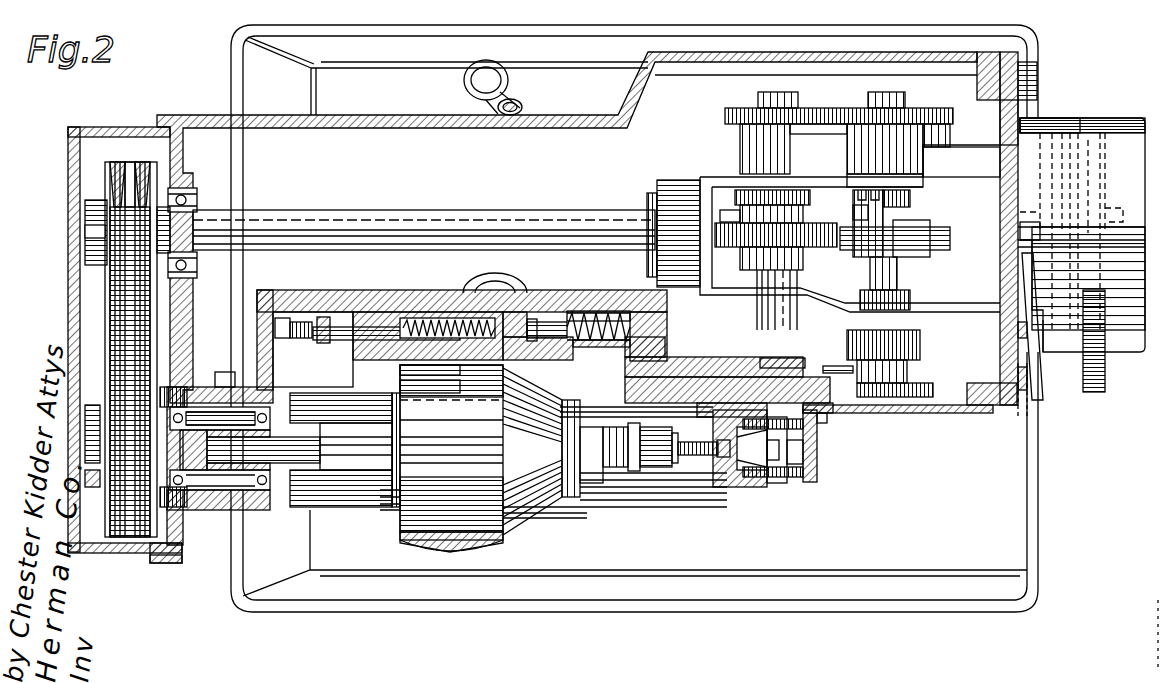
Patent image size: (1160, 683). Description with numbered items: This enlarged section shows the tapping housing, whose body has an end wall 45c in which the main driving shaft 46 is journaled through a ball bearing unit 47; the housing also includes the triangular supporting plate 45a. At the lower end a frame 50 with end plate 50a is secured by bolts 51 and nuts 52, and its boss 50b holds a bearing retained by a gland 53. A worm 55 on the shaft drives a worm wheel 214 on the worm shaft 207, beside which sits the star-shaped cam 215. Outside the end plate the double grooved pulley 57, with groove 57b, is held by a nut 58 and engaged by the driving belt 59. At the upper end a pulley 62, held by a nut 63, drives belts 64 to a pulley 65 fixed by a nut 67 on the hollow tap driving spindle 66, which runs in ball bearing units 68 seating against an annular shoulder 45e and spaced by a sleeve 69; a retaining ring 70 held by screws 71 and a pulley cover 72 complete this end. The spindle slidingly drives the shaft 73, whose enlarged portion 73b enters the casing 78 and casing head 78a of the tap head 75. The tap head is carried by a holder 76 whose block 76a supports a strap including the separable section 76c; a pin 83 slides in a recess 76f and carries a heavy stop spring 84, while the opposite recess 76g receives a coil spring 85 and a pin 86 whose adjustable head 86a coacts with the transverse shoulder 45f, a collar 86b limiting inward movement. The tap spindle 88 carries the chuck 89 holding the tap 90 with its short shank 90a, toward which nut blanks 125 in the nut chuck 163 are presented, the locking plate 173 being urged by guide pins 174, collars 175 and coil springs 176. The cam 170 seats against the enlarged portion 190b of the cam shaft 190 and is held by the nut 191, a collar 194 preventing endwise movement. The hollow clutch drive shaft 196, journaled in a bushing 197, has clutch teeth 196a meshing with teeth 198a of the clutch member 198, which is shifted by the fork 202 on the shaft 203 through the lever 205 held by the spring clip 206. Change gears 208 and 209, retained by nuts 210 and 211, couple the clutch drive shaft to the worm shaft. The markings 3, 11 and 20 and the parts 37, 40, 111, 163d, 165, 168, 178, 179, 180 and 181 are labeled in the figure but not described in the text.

The section line 3 is at (1131, 218).
The section line 11 is at (610, 218).
The section line 20 is at (343, 203).
The filler plug 37 is at (522, 104).
The drive shaft 40 is at (493, 283).
The supporting plate 45a is at (222, 372).
The end wall 45c is at (187, 147).
The annular shoulder 45e is at (290, 410).
The transverse shoulder 45f is at (282, 293).
The main driving shaft 46 is at (362, 213).
The ball bearing unit 47 is at (190, 198).
The frame 50 is at (731, 165).
The end plate 50a is at (1020, 110).
The boss 50b is at (672, 180).
The bolts 51 is at (995, 428).
The nuts 52 is at (1034, 72).
The gland 53 is at (660, 181).
The worm 55 is at (740, 212).
The double grooved pulley 57 is at (1112, 167).
The groove 57b is at (1068, 122).
The nut 58 is at (1112, 206).
The driving belt 59 is at (1112, 122).
The pulley 62 is at (105, 178).
The nut 63 is at (87, 228).
The belts 64 is at (135, 325).
The pulley 65 is at (105, 372).
The hollow tap driving spindle 66 is at (200, 517).
The nut 67 is at (87, 405).
The ball bearing units 68 is at (215, 410).
The sleeve 69 is at (235, 513).
The retaining ring 70 is at (150, 552).
The screws 71 is at (187, 392).
The pulley cover 72 is at (88, 127).
The shaft 73 is at (297, 507).
The enlarged portion 73b is at (322, 447).
The tap head 75 is at (451, 452).
The holder 76 is at (439, 561).
The block 76a is at (417, 372).
The separable semicircular section 76c is at (478, 554).
The cylindrical recess 76f is at (540, 320).
The cylindrical recess 76g is at (398, 325).
The casing 78 is at (322, 508).
The casing head 78a is at (437, 393).
The pin 83 is at (560, 322).
The heavy coil spring 84 is at (600, 315).
The coil spring 85 is at (425, 320).
The pin 86 is at (378, 325).
The adjustable head 86a is at (312, 320).
The collar 86b is at (345, 325).
The tap spindle 88 is at (603, 470).
The chuck 89 is at (650, 470).
The tap 90 is at (705, 462).
The shank 90a is at (668, 470).
The cone 111 is at (568, 430).
The nut blanks 125 is at (745, 480).
The nut chuck 163 is at (727, 400).
The bracket bore 163d is at (781, 450).
The bracket arm 165 is at (627, 385).
The screw 168 is at (835, 380).
The cam 170 is at (930, 415).
The locking plate 173 is at (740, 493).
The guide pins 174 is at (812, 486).
The collar 175 is at (776, 484).
The coil spring 176 is at (782, 377).
The rod 178 is at (575, 520).
The sleeve 179 is at (300, 425).
The upright 180 is at (818, 468).
The lug 181 is at (915, 447).
The cam shaft 190 is at (900, 283).
The enlarged portion 190b is at (910, 370).
The nut 191 is at (903, 400).
The collar 194 is at (910, 300).
The clutch drive shaft 196 is at (868, 190).
The clutch teeth 196a is at (910, 200).
The bushing 197 is at (893, 178).
The clutch member 198 is at (905, 268).
The clutch teeth 198a is at (860, 208).
The shifter fork 202 is at (855, 252).
The shaft 203 is at (953, 227).
The clutch shifting lever 205 is at (1040, 372).
The spring clip 206 is at (1057, 348).
The worm shaft 207 is at (798, 282).
The change gear 208 is at (961, 153).
The change gear 209 is at (725, 115).
The nut 210 is at (900, 108).
The nut 211 is at (760, 99).
The worm wheel 214 is at (715, 231).
The star-shaped cam 215 is at (742, 192).